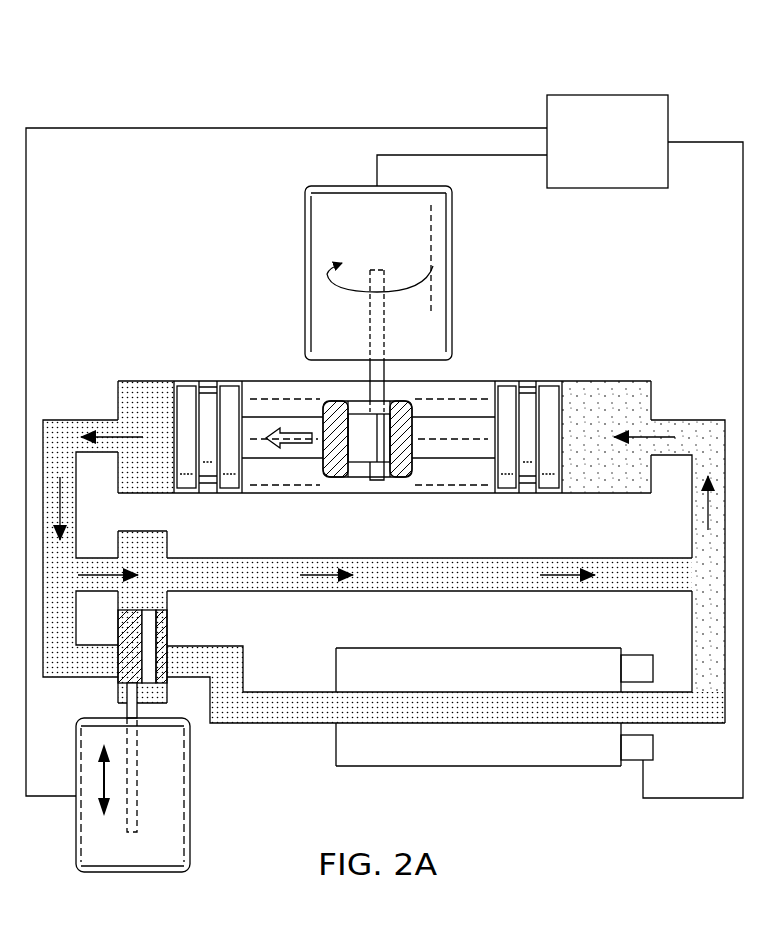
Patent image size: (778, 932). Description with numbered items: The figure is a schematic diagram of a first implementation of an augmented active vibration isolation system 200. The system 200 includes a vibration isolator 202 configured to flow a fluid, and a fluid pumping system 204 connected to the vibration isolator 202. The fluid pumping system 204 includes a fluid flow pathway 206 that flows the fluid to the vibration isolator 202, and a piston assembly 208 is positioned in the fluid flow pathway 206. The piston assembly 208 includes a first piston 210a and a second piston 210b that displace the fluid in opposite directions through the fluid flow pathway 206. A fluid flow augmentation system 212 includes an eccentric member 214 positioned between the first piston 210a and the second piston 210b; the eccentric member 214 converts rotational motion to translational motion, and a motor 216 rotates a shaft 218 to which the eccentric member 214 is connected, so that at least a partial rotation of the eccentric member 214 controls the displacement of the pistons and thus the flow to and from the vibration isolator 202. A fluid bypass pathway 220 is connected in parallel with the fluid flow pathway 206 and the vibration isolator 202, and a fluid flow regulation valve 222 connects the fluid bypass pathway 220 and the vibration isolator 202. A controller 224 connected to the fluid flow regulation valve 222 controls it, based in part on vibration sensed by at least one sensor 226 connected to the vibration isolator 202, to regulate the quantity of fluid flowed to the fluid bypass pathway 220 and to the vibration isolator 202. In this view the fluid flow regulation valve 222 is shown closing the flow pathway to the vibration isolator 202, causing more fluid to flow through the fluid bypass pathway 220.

The augmented active vibration isolation system 200 is at (165, 62).
The vibration isolator 202 is at (582, 767).
The fluid pumping system 204 is at (222, 212).
The fluid flow pathway 206 is at (651, 396).
The piston assembly 208 is at (450, 478).
The first piston 210a is at (495, 397).
The second piston 210b is at (258, 397).
The fluid flow augmentation system 212 is at (619, 350).
The eccentric member 214 is at (366, 462).
The motor 216 is at (453, 278).
The shaft 218 is at (370, 372).
The fluid bypass pathway 220 is at (512, 593).
The fluid flow regulation valve 222 is at (192, 828).
The controller 224 is at (625, 156).
The sensor 226 is at (655, 745).